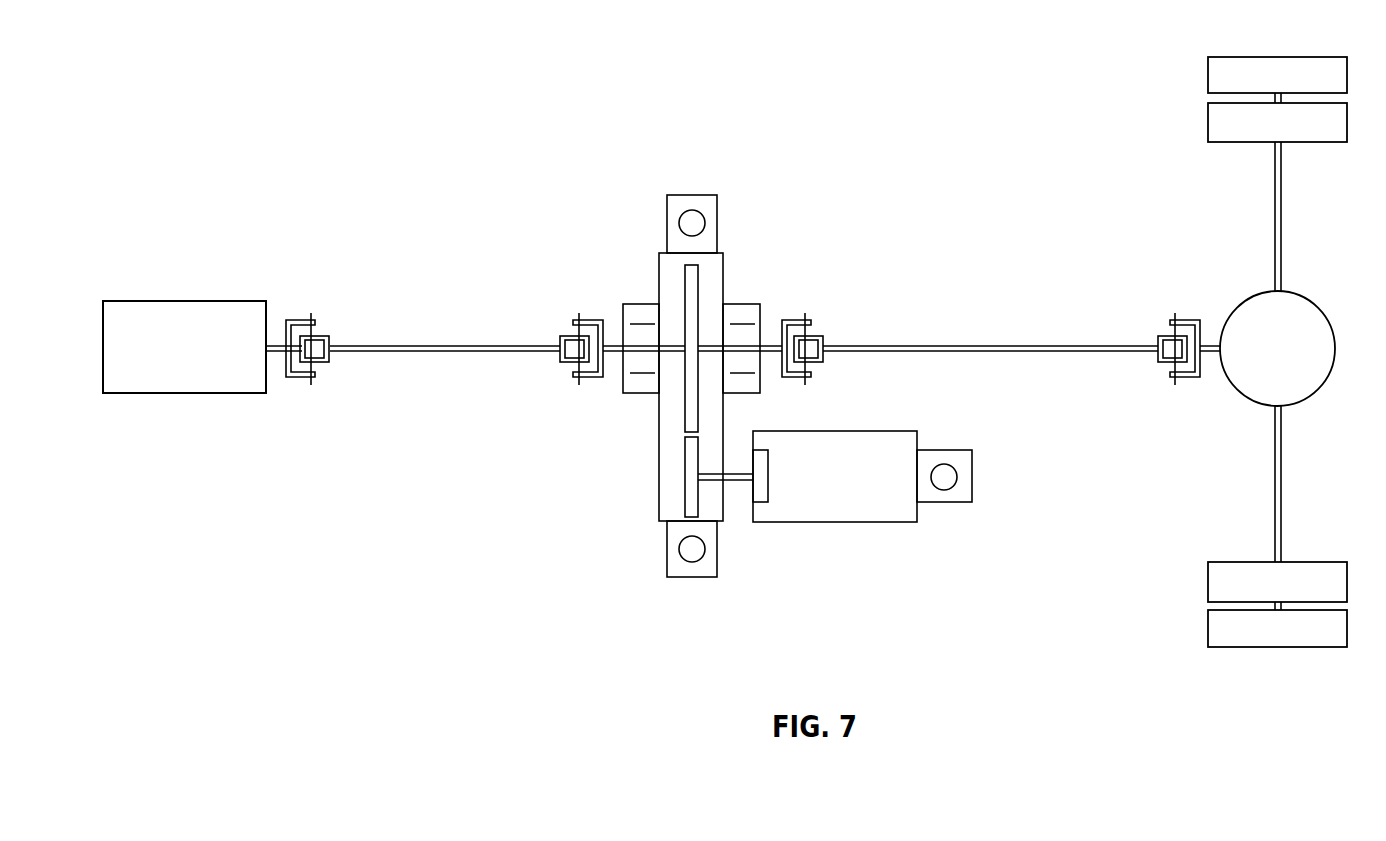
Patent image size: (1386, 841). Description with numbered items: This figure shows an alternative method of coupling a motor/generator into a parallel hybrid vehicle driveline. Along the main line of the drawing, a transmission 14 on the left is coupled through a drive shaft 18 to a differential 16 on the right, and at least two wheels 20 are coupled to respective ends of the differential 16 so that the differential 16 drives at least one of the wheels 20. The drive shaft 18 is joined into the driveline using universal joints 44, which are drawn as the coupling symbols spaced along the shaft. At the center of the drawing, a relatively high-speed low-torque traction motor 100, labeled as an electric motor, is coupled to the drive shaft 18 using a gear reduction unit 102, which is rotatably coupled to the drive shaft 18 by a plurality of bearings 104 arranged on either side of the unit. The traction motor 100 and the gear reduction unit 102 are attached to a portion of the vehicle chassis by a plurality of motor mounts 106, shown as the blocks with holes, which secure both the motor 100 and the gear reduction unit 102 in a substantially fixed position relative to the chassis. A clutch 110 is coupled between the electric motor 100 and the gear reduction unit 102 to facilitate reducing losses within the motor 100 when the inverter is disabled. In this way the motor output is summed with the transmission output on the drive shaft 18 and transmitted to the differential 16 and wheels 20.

The transmission 14 is at (158, 300).
The differential 16 is at (1303, 291).
The drive shaft 18 is at (445, 352).
The wheels 20 is at (1266, 57).
The universal joints 44 is at (300, 378).
The high-speed low-torque traction motor 100 is at (843, 431).
The gear reduction unit 102 is at (676, 421).
The bearings 104 is at (633, 303).
The motor mounts 106 is at (703, 195).
The clutch 110 is at (763, 503).